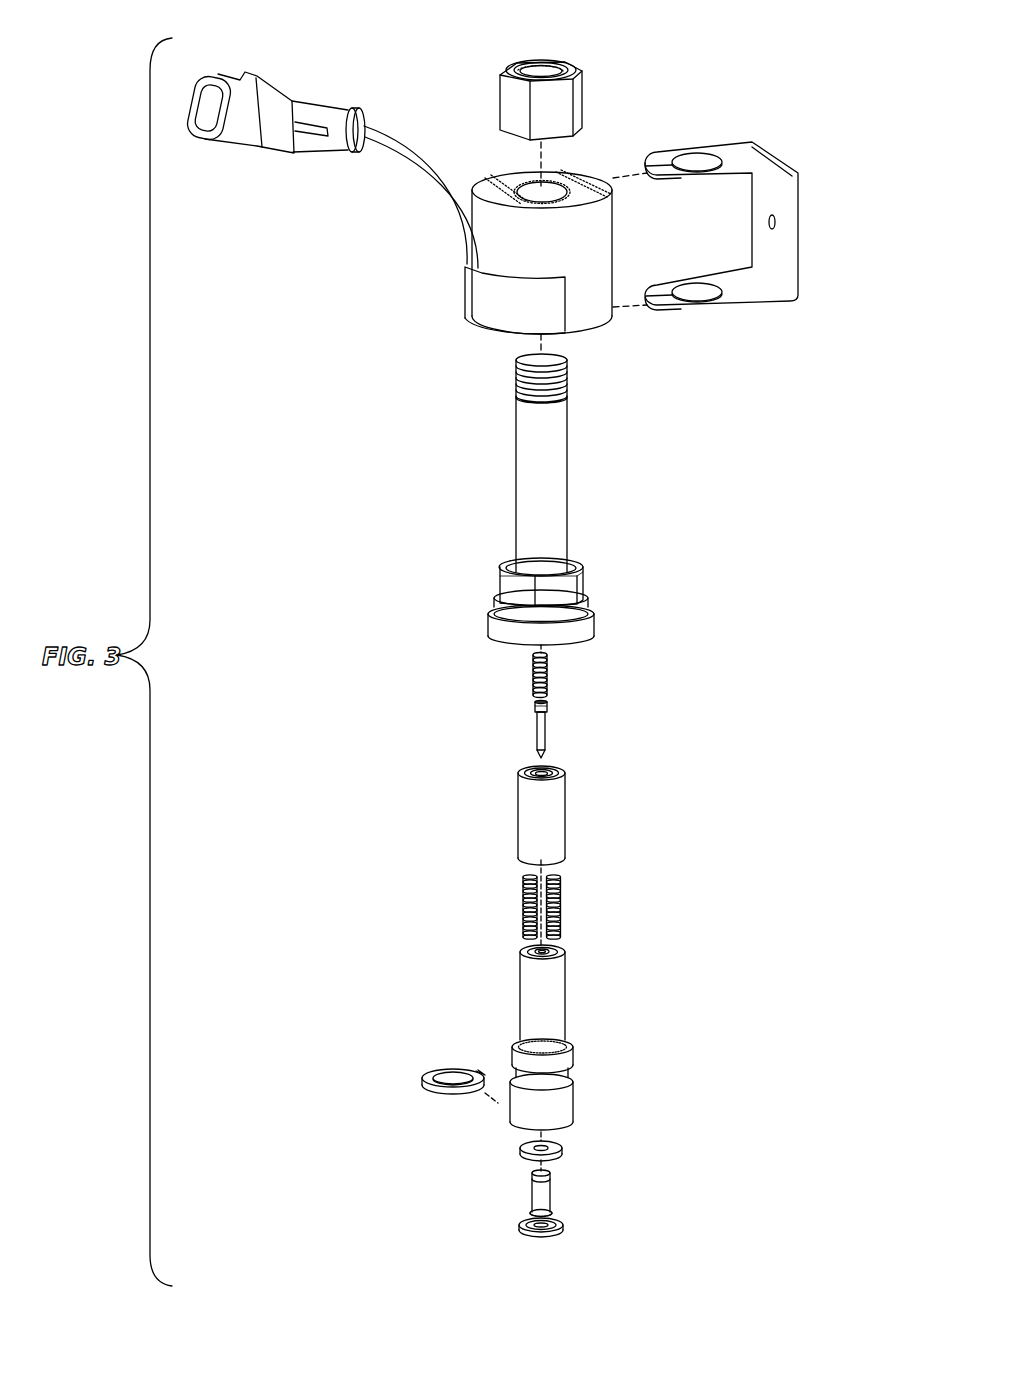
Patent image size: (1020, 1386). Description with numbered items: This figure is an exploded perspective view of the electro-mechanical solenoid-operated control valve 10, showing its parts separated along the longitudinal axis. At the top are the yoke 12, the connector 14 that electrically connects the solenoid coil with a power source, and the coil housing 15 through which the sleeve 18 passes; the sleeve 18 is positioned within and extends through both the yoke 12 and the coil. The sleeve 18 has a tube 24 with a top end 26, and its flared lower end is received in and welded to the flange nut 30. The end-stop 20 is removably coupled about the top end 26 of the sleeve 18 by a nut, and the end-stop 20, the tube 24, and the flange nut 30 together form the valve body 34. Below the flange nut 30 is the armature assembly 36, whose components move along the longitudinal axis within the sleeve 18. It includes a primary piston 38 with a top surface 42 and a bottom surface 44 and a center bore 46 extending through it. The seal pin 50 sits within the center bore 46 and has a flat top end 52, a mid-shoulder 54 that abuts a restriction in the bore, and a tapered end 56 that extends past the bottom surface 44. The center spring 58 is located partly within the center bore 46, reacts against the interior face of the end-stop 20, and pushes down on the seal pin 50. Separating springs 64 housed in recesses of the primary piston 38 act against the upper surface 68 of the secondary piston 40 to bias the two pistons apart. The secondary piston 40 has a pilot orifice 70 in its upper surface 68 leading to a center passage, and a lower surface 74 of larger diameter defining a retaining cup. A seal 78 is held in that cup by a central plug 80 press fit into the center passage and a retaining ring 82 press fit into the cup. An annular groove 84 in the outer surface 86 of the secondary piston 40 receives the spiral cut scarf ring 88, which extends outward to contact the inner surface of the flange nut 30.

The solenoid-operated control valve 10 is at (660, 42).
The yoke 12 is at (752, 306).
The connector 14 is at (253, 146).
The solenoid coil 15 is at (463, 287).
The sleeve 18 is at (560, 463).
The end-stop 20 is at (517, 372).
The tube 24 is at (588, 522).
The top end 26 is at (568, 393).
The flange nut 30 is at (587, 600).
The valve body 34 is at (626, 573).
The armature assembly 36 is at (615, 951).
The primary piston 38 is at (565, 830).
The secondary piston 40 is at (551, 986).
The top surface 42 is at (556, 776).
The bottom surface 44 is at (556, 858).
The center bore 46 is at (574, 812).
The seal pin 50 is at (477, 726).
The flat top end 52 is at (534, 705).
The mid-shoulder 54 is at (537, 712).
The tapered end 56 is at (510, 763).
The center spring 58 is at (549, 665).
The separating springs 64 is at (570, 906).
The upper surface 68 is at (549, 952).
The pilot orifice 70 is at (527, 956).
The lower surface 74 is at (566, 1122).
The seal 78 is at (560, 1157).
The central plug 80 is at (533, 1196).
The retaining ring 82 is at (527, 1236).
The annular groove 84 is at (572, 1078).
The outer surface 86 is at (512, 1058).
The spiral cut scarf ring 88 is at (426, 1070).